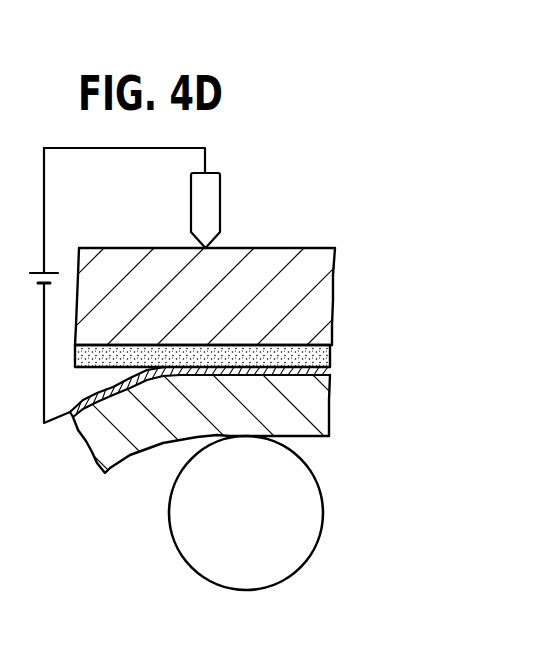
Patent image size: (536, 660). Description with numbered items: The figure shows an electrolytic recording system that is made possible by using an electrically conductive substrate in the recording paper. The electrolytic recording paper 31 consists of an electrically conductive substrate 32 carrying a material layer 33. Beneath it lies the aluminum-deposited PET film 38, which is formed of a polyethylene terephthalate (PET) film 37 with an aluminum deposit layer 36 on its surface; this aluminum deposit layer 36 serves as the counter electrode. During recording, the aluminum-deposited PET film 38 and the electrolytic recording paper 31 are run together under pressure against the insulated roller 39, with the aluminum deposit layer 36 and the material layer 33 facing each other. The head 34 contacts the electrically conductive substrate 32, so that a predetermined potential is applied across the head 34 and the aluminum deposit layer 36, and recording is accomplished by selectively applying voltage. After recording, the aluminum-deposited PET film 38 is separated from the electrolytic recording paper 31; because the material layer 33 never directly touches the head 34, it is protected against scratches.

The electrolytic recording paper 31 is at (230, 307).
The electrically conductive substrate 32 is at (330, 306).
The material layer 33 is at (330, 355).
The head 34 is at (210, 193).
The aluminum deposit layer 36 is at (330, 373).
The polyethylene terephthalate (PET) film 37 is at (330, 408).
The aluminum-deposited PET film 38 is at (219, 417).
The insulated roller 39 is at (307, 508).